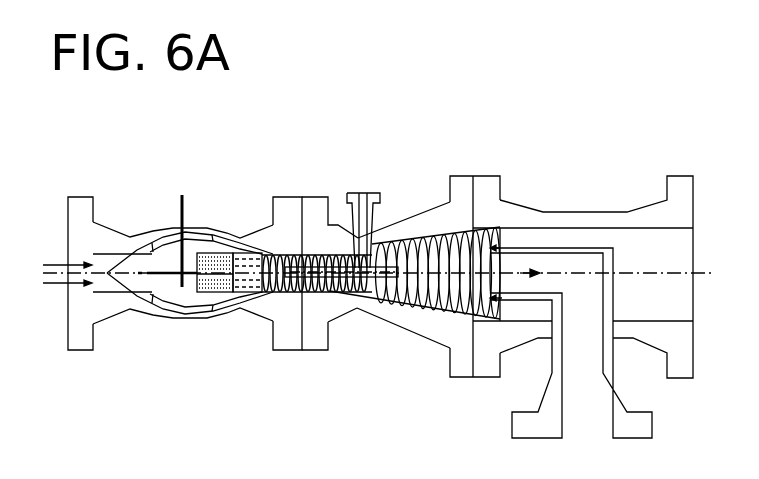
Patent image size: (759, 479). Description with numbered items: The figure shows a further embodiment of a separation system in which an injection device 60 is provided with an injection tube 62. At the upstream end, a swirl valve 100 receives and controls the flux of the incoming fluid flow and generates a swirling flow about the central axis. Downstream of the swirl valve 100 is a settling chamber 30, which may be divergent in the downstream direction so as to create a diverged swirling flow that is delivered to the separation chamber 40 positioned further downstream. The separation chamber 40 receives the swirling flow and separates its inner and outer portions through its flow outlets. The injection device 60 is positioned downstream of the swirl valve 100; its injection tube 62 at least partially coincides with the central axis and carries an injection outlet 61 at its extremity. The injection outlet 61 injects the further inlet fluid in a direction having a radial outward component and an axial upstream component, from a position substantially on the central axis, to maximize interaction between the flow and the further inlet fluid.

The swirl valve 100 is at (83, 201).
The settling chamber 30 is at (462, 183).
The separation chamber 40 is at (503, 210).
The injection device 60 is at (383, 193).
The injection outlet 61 is at (280, 253).
The injection tube 62 is at (338, 291).